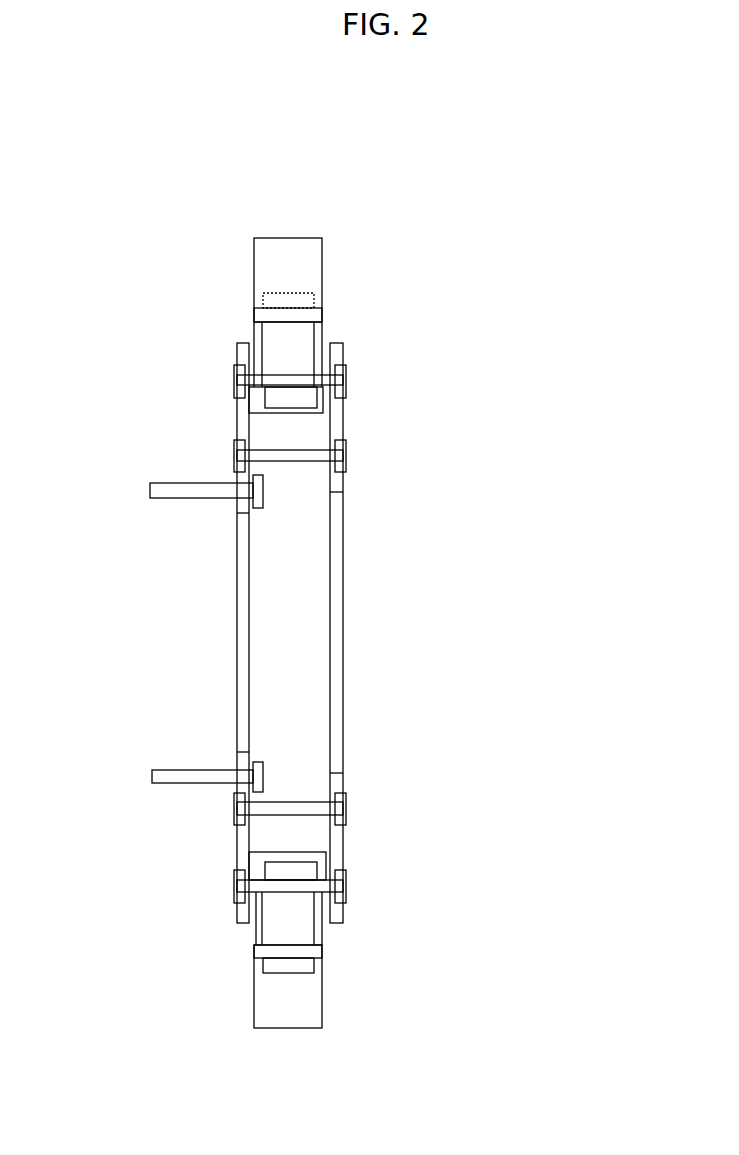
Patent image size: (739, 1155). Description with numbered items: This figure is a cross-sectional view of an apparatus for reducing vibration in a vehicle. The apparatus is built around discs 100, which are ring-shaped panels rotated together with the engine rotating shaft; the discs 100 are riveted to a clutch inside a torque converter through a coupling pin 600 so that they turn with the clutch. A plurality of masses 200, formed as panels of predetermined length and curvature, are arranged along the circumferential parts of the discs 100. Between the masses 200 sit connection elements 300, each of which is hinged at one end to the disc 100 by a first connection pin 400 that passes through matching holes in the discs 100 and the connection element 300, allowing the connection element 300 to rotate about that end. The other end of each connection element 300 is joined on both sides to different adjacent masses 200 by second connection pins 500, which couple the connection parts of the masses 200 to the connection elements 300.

The disc 100 is at (335, 420).
The mass 200 is at (303, 250).
The connection element 300 is at (305, 338).
The first connection pin 400 is at (236, 381).
The second connection pin 500 is at (258, 317).
The coupling pin 600 is at (183, 498).